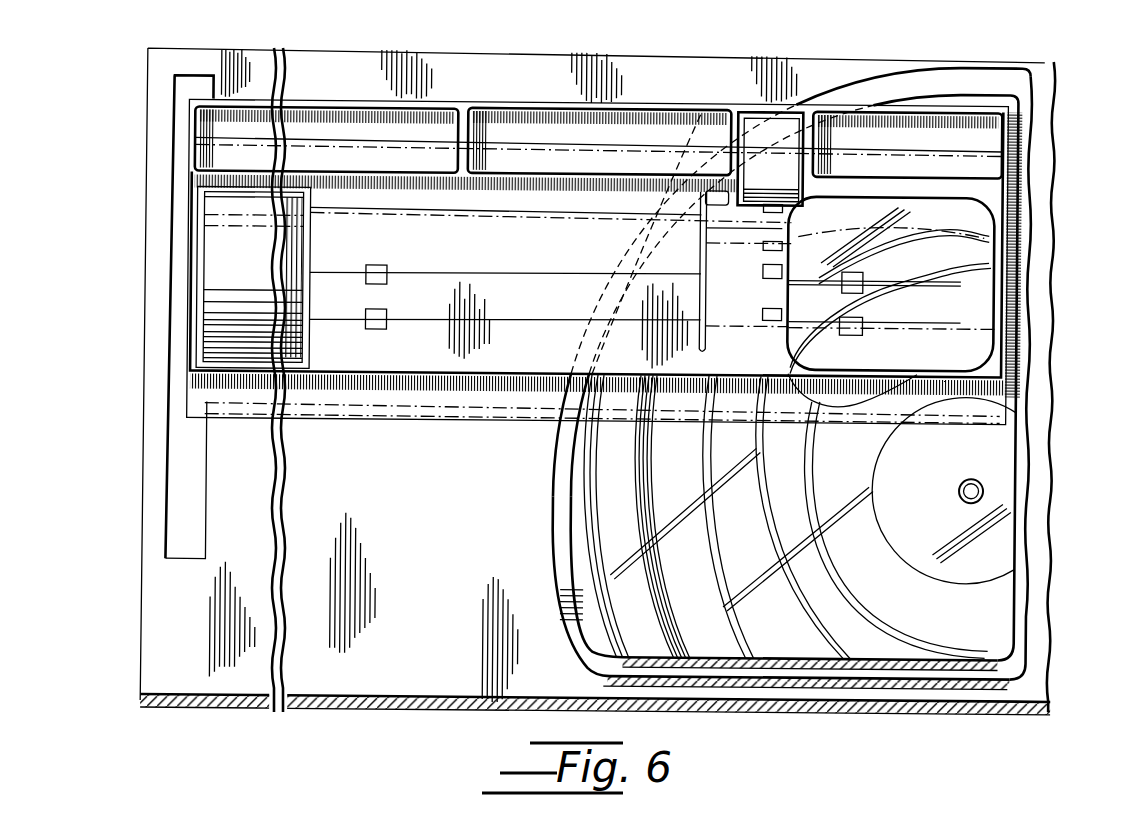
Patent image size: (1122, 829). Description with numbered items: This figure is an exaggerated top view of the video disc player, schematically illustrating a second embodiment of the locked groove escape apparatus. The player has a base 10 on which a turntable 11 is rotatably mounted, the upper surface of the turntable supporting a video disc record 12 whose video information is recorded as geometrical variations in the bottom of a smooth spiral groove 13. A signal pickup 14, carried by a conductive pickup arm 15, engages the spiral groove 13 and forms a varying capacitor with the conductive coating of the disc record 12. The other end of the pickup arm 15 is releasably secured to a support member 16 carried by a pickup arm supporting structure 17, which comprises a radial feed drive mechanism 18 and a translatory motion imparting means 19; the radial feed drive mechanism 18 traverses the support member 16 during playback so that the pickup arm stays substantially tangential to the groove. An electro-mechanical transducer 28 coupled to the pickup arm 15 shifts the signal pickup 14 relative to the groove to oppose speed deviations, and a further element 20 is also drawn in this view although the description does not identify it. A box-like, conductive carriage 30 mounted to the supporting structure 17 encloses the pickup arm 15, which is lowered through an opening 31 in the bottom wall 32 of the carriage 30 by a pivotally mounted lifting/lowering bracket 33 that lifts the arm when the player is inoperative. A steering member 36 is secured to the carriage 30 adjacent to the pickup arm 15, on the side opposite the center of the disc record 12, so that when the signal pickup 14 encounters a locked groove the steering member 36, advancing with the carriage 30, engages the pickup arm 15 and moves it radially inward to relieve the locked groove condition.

The base 10 is at (338, 710).
The turntable 11 is at (550, 529).
The video disc record 12 is at (549, 453).
The spiral groove 13 is at (762, 430).
The signal pickup 14 is at (960, 282).
The pickup arm 15 is at (497, 278).
The support member 16 is at (388, 306).
The pickup arm supporting structure 17 is at (190, 153).
The radial feed drive mechanism 18 is at (188, 344).
The translatory motion imparting means 19 is at (245, 276).
The clamp block 20 is at (845, 317).
The electro-mechanical transducer 28 is at (311, 340).
The carriage 30 is at (383, 383).
The opening 31 is at (880, 400).
The bottom wall 32 is at (542, 360).
The lifting/lowering bracket 33 is at (707, 258).
The steering member 36 is at (760, 310).